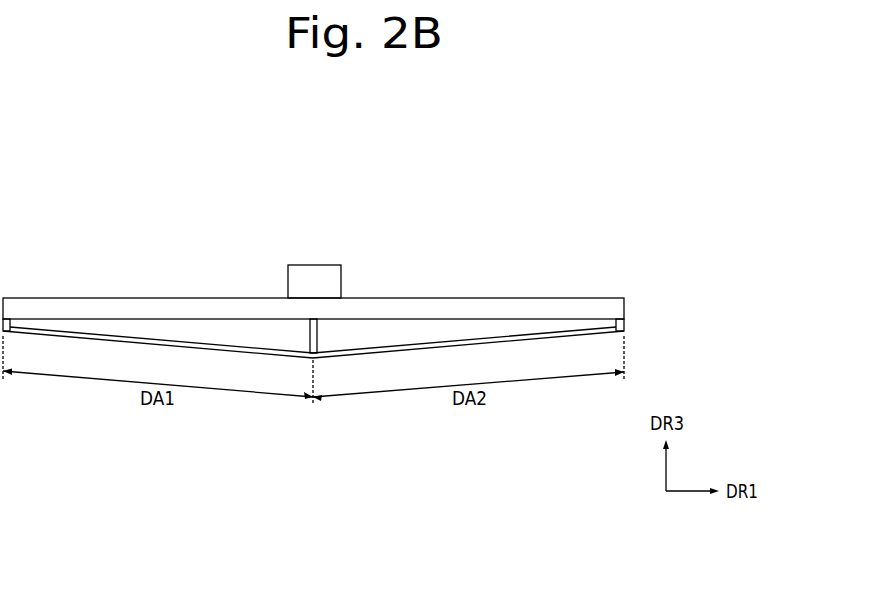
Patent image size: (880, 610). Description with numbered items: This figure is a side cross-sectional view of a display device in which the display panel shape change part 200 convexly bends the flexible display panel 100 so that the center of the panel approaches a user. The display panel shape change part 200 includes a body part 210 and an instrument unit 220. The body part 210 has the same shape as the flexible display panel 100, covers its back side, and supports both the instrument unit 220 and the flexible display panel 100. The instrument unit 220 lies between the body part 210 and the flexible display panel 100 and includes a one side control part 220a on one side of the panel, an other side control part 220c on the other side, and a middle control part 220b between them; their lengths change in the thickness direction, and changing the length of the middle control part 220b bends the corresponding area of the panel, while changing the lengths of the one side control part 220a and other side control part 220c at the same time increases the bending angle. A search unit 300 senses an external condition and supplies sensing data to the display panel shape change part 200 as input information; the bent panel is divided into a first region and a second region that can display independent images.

The flexible display panel 100 is at (622, 330).
The display panel shape change part 200 is at (632, 166).
The body part 210 is at (614, 298).
The instrument unit 220 is at (538, 202).
The one side control part 220a is at (7, 322).
The middle control part 220b is at (313, 320).
The other side control part 220c is at (617, 322).
The search unit 300 is at (333, 281).